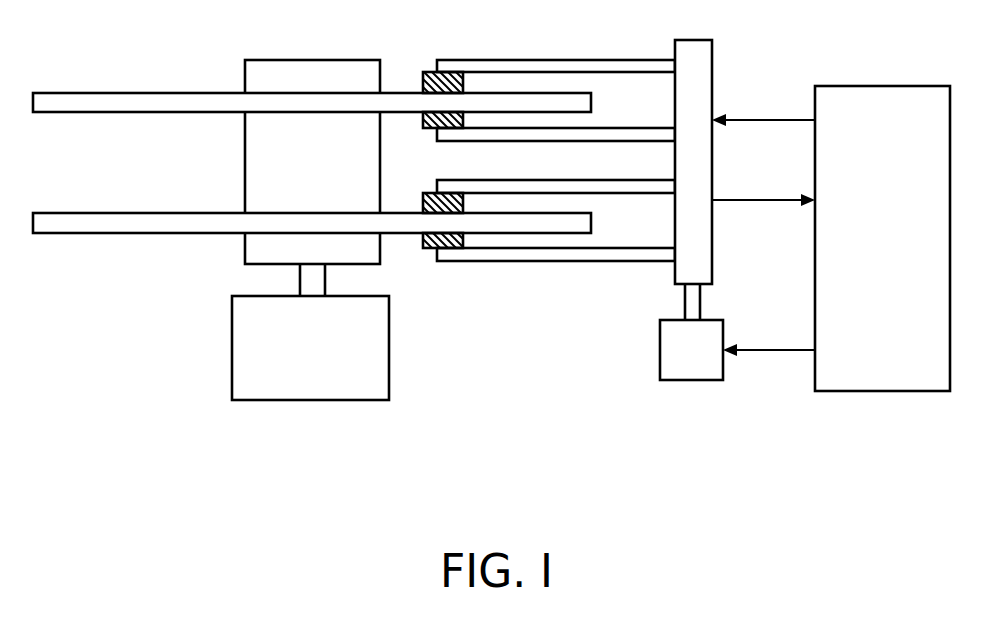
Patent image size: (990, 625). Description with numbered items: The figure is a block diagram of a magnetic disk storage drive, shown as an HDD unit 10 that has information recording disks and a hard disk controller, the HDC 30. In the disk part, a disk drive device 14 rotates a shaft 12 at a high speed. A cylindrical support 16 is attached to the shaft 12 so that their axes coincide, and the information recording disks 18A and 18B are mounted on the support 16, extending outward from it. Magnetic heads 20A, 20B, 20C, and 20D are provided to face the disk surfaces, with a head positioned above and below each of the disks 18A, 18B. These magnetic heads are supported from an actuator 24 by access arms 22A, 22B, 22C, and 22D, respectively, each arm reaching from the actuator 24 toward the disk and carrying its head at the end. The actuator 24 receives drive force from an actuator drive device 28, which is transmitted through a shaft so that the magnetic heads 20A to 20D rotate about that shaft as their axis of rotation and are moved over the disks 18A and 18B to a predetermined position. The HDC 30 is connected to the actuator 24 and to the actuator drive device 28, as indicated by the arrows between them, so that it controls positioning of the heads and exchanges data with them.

The HDD unit 10 is at (188, 62).
The shaft 12 is at (300, 277).
The disk drive device 14 is at (321, 367).
The cylindrical support 16 is at (326, 59).
The information recording disk 18A is at (106, 92).
The information recording disk 18B is at (106, 235).
The magnetic head 20A is at (428, 73).
The magnetic head 20B is at (425, 124).
The magnetic head 20C is at (425, 200).
The magnetic head 20D is at (425, 249).
The access arm 22A is at (540, 60).
The access arm 22B is at (539, 142).
The access arm 22C is at (545, 180).
The access arm 22D is at (548, 262).
The actuator 24 is at (712, 60).
The actuator drive device 28 is at (660, 338).
The hard disk controller 30 is at (896, 285).